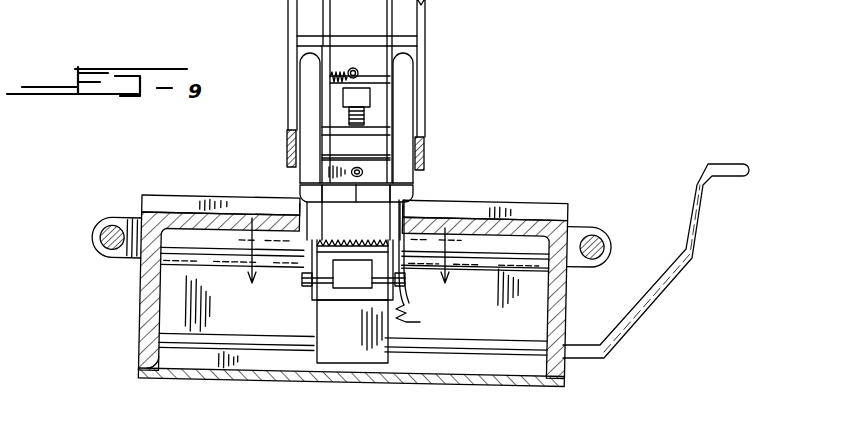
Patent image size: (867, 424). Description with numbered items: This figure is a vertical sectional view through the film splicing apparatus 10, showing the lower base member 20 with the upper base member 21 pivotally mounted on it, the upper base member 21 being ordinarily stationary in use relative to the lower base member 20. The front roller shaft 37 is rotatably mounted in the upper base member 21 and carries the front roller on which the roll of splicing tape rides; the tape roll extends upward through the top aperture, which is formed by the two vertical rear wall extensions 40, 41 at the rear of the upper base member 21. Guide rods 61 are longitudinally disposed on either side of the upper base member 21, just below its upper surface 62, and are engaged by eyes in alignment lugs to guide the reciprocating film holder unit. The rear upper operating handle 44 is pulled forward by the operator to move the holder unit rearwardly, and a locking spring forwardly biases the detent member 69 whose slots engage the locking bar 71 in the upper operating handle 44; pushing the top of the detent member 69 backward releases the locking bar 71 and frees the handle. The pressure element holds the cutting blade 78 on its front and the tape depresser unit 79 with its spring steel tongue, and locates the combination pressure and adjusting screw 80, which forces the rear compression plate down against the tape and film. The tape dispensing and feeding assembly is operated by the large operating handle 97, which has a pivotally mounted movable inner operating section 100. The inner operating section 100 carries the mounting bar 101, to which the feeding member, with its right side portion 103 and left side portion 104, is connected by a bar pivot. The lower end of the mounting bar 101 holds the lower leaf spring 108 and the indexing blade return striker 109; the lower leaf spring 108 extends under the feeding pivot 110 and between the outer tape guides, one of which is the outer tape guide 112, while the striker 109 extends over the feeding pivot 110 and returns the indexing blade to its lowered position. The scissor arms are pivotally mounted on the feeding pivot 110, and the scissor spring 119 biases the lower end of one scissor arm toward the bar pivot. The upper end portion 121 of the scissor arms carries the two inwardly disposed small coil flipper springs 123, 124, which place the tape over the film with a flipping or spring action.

The direction arrows 10 is at (344, 259).
The lower base member 20 is at (567, 310).
The upper base member 21 is at (548, 381).
The front roller shaft 37 is at (495, 265).
The vertical rear wall extension 40 is at (395, 138).
The vertical rear wall extension 41 is at (300, 73).
The upper operating handle 44 is at (287, 27).
The guide rod 61 is at (112, 228).
The upper surface 62 is at (524, 222).
The detent member 69 is at (354, 77).
The locking bar 71 is at (412, 43).
The cutting blade 78 is at (392, 180).
The tape depresser unit 79 is at (412, 195).
The combination pressure and adjusting screw 80 is at (392, 111).
The operating handle 97 is at (701, 236).
The inner operating section 100 is at (494, 352).
The mounting bar 101 is at (374, 365).
The right side portion 103 is at (406, 298).
The left side portion 104 is at (311, 292).
The lower leaf spring 108 is at (380, 262).
The indexing blade return striker 109 is at (342, 283).
The feeding pivot 110 is at (405, 281).
The outer tape guide 112 is at (303, 236).
The scissor spring 119 is at (410, 322).
The upper end portion 121 is at (303, 200).
The flipper spring 123 is at (352, 203).
The flipper spring 124 is at (380, 203).